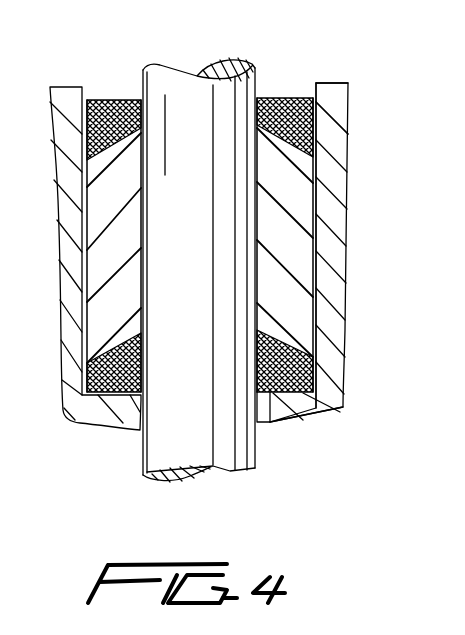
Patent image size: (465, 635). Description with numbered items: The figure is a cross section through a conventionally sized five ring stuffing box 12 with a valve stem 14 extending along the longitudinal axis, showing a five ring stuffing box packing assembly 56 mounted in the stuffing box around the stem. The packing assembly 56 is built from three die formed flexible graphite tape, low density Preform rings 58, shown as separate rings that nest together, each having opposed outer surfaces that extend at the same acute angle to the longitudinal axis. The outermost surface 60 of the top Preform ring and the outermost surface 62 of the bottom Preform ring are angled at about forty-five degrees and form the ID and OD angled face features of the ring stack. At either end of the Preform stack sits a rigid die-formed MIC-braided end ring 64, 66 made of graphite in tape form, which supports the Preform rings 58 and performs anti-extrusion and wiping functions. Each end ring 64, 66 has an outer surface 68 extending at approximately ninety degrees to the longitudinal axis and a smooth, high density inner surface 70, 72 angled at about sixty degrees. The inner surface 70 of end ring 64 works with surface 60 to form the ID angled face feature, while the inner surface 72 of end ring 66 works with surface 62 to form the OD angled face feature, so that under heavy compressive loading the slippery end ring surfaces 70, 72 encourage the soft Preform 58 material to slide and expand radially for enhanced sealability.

The five ring stuffing box 12 is at (63, 95).
The valve stem 14 is at (147, 448).
The five ring stuffing box packing assembly 56 is at (319, 79).
The Preform rings 58 is at (297, 200).
The outer surface 60 is at (96, 148).
The outer surface 62 is at (104, 284).
The end ring 64 is at (320, 127).
The end ring 66 is at (293, 403).
The outer surface 68 is at (280, 98).
The inner surface 70 is at (110, 102).
The inner surface 72 is at (318, 346).